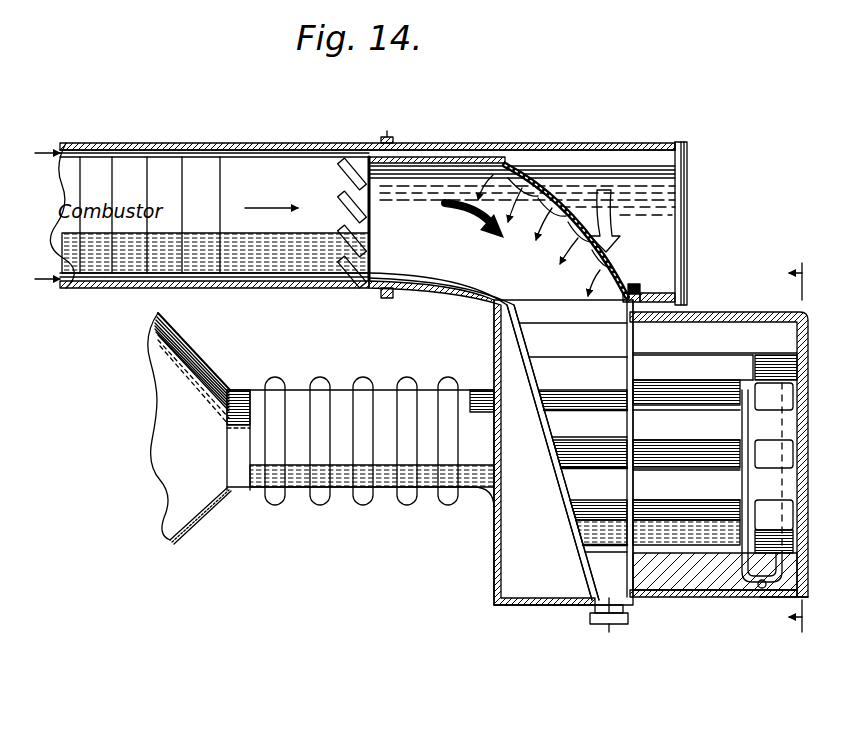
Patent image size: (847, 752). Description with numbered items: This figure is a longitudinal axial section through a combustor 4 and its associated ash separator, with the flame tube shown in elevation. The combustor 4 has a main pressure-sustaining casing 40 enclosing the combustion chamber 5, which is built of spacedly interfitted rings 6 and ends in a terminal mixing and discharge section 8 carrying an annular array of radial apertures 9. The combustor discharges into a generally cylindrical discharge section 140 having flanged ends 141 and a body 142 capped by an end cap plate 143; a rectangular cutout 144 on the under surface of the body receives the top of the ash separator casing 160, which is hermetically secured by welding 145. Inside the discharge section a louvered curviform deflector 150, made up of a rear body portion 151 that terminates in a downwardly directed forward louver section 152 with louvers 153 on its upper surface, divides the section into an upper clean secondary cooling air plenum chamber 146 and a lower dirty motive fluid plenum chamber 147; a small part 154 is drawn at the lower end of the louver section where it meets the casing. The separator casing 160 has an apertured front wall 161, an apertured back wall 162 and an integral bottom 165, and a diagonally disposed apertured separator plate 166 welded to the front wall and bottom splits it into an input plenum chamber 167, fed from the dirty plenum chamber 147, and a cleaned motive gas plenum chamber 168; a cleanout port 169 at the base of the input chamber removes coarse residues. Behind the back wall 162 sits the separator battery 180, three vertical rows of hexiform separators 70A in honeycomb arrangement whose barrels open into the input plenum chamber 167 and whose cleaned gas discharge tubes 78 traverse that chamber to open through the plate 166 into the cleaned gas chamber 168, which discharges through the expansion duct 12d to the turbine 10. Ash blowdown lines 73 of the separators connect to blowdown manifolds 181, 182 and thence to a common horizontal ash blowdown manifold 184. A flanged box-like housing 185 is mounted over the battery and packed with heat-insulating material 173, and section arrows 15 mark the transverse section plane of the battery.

The combustor 4 is at (236, 145).
The combustion chamber 5 is at (131, 168).
The rings 6 is at (214, 215).
The terminal mixing and discharge section 8 is at (290, 193).
The radial apertures 9 is at (355, 163).
The turbine 10 is at (233, 352).
The expansion duct 12d is at (355, 506).
The section line 15 is at (809, 447).
The casing 40 is at (304, 146).
The hexiform separators 70A is at (700, 348).
The ash blowdown lines 73 is at (846, 406).
The cleaned gas discharge tubes 78 is at (578, 440).
The discharge section 140 is at (461, 148).
The flanged ends 141 is at (395, 142).
The body 142 is at (575, 151).
The end cap plate 143 is at (688, 184).
The rectangular cutout 144 is at (660, 297).
The welding 145 is at (510, 281).
The secondary cooling air plenum chamber 146 is at (652, 226).
The dirty motive fluid plenum chamber 147 is at (462, 286).
The louvered curviform deflector 150 is at (552, 140).
The rear body portion 151 is at (442, 142).
The forward louver section 152 is at (612, 151).
The louvers 153 is at (629, 283).
The bracket 154 is at (641, 292).
The ash separator casing 160 is at (492, 343).
The front wall 161 is at (494, 548).
The back wall 162 is at (630, 311).
The bottom 165 is at (541, 606).
The separator plate 166 is at (552, 463).
The input plenum chamber 167 is at (556, 300).
The cleaned motive gas plenum chamber 168 is at (547, 452).
The cleanout port 169 is at (611, 622).
The heat-insulating material 173 is at (678, 586).
The separator battery 180 is at (706, 596).
The blowdown manifold 181 is at (740, 628).
The blowdown manifold 182 is at (796, 574).
The ash blowdown manifold 184 is at (786, 596).
The housing 185 is at (758, 602).